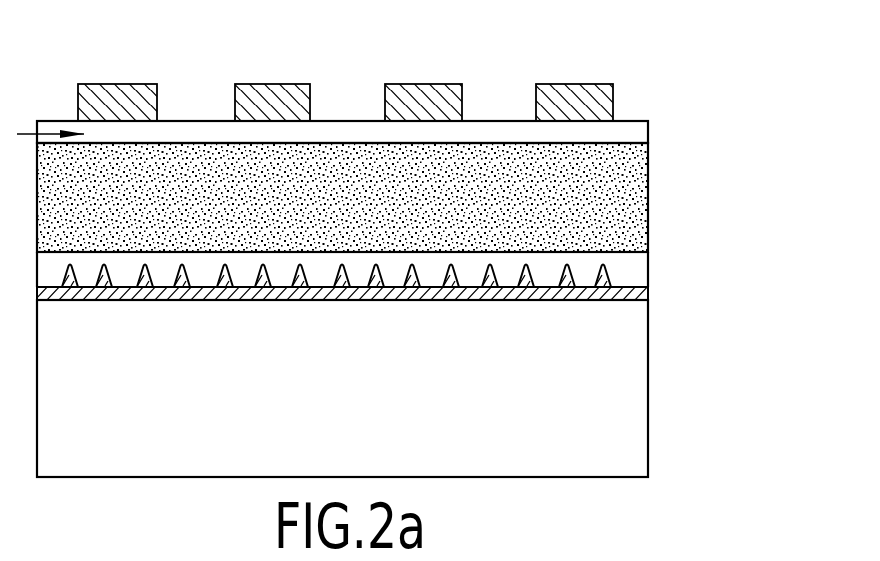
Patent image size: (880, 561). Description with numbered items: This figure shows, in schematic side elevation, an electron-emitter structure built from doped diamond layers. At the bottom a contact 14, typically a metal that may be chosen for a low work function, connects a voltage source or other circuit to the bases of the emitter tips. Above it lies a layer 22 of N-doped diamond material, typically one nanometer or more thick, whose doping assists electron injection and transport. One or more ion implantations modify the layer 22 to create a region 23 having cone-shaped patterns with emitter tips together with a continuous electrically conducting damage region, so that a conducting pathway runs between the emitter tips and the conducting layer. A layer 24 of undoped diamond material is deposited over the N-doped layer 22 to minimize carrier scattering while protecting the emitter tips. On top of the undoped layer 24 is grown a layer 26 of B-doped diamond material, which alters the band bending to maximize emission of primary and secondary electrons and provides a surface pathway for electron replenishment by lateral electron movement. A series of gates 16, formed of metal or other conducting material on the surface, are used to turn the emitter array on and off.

The contact 14 is at (632, 399).
The gates 16 is at (117, 77).
The layer of N-doped diamond material 22 is at (640, 264).
The region with cone shaped patterns 23 is at (634, 291).
The layer of undoped diamond material 24 is at (630, 197).
The layer of B-doped diamond material 26 is at (634, 127).